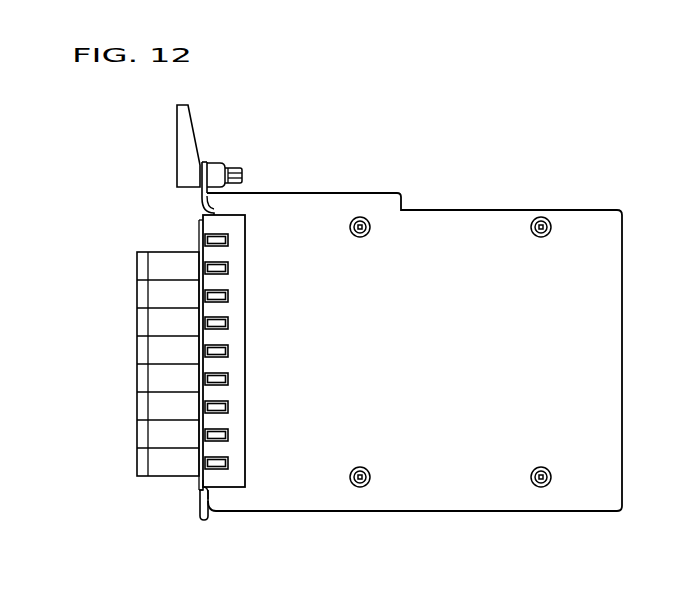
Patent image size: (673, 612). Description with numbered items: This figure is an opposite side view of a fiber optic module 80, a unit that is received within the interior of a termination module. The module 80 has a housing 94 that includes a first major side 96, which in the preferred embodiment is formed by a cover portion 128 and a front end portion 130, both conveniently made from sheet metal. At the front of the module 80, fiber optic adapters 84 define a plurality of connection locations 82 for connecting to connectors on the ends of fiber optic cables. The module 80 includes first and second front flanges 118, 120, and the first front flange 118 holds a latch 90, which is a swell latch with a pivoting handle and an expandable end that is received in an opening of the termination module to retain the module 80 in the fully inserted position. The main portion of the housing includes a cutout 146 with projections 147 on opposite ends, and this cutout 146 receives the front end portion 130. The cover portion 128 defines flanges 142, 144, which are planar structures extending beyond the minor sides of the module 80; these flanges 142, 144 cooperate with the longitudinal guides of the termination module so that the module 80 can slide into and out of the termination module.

The fiber optic module 80 is at (456, 147).
The connection locations 82 is at (112, 382).
The fiber optic adapters 84 is at (137, 268).
The latch 90 is at (189, 134).
The housing 94 is at (622, 420).
The first major side 96 is at (540, 287).
The first front flange 118 is at (201, 194).
The second front flange 120 is at (200, 512).
The cover portion 128 is at (442, 340).
The front end portion 130 is at (205, 483).
The flange 142 is at (315, 193).
The flange 144 is at (241, 511).
The cutout 146 is at (245, 397).
The projections 147 is at (226, 200).